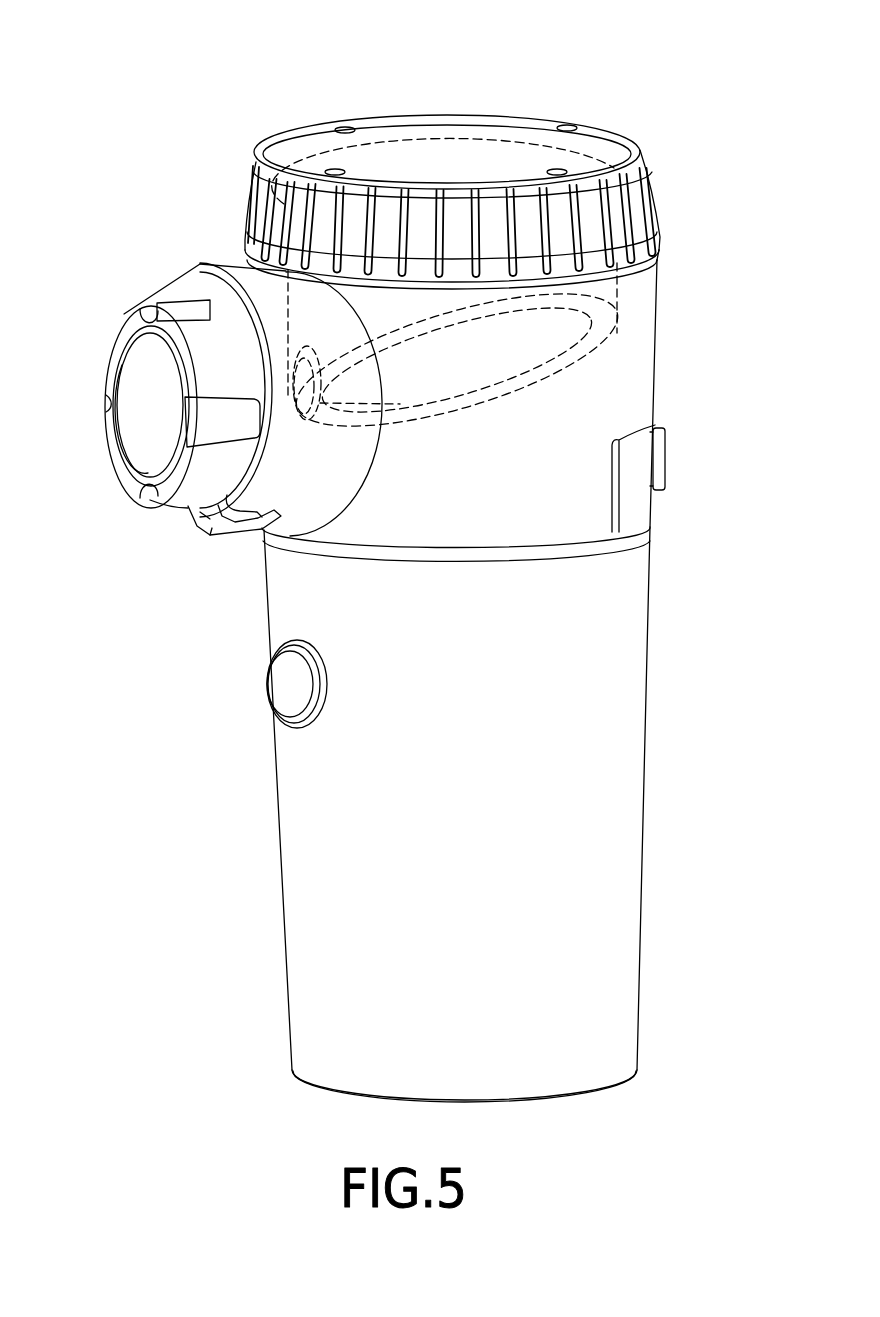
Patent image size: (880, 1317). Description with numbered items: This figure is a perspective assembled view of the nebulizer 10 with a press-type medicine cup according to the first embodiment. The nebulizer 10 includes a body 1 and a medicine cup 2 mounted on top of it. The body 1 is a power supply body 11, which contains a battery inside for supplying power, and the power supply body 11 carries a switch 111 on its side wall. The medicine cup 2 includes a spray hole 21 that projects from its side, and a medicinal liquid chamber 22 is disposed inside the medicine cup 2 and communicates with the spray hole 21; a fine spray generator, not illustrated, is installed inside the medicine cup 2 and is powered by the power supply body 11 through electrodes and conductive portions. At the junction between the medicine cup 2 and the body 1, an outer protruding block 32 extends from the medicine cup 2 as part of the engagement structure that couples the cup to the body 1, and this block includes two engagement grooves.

The nebulizer 10 is at (413, 51).
The body 1 is at (270, 868).
The power supply body 11 is at (286, 931).
The switch 111 is at (282, 683).
The medicine cup 2 is at (662, 326).
The spray hole 21 is at (142, 425).
The medicinal liquid chamber 22 is at (563, 348).
The outer protruding block 32 is at (540, 537).